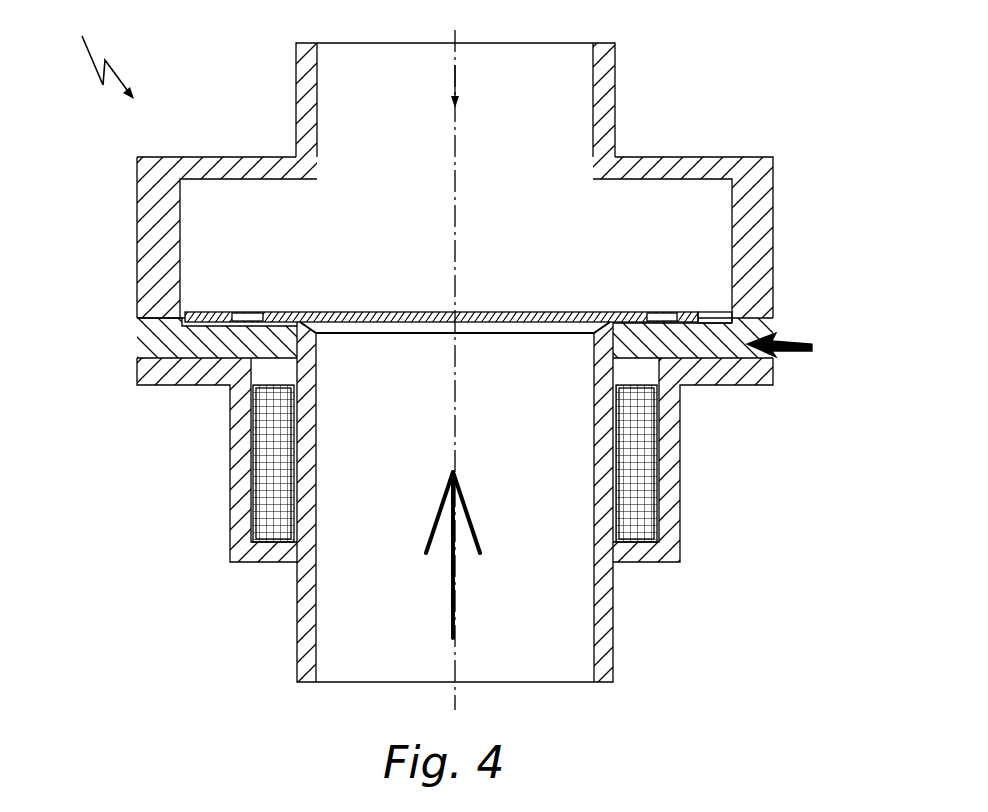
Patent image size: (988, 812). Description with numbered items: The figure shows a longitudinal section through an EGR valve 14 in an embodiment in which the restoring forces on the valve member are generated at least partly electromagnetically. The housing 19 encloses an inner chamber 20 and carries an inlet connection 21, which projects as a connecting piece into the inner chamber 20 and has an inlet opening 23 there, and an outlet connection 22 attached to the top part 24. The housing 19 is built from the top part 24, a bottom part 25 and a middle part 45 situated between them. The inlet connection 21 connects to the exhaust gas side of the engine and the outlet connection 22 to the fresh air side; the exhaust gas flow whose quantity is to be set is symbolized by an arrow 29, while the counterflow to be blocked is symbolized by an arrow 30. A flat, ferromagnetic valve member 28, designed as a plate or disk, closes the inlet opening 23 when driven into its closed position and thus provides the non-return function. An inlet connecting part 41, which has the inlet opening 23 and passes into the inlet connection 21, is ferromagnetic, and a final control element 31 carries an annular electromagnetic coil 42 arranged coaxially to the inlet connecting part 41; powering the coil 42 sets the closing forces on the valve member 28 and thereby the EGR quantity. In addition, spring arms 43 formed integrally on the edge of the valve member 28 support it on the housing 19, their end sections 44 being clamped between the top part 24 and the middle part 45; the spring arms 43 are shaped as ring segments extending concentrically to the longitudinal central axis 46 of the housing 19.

The EGR valve 14 is at (97, 50).
The housing 19 is at (799, 351).
The inner chamber 20 is at (393, 237).
The inlet connection 21 is at (607, 627).
The outlet connection 22 is at (610, 76).
The inlet opening 23 is at (300, 326).
The top part 24 is at (147, 246).
The bottom part 25 is at (172, 378).
The valve member 28 is at (553, 318).
The arrow 29 is at (456, 588).
The arrow 30 is at (455, 83).
The final control element 31 is at (652, 469).
The inlet connecting part 41 is at (310, 414).
The electromagnetic coil 42 is at (642, 501).
The spring arms 43 is at (692, 312).
The end sections 44 is at (211, 312).
The middle part 45 is at (146, 337).
The longitudinal central axis 46 is at (453, 268).